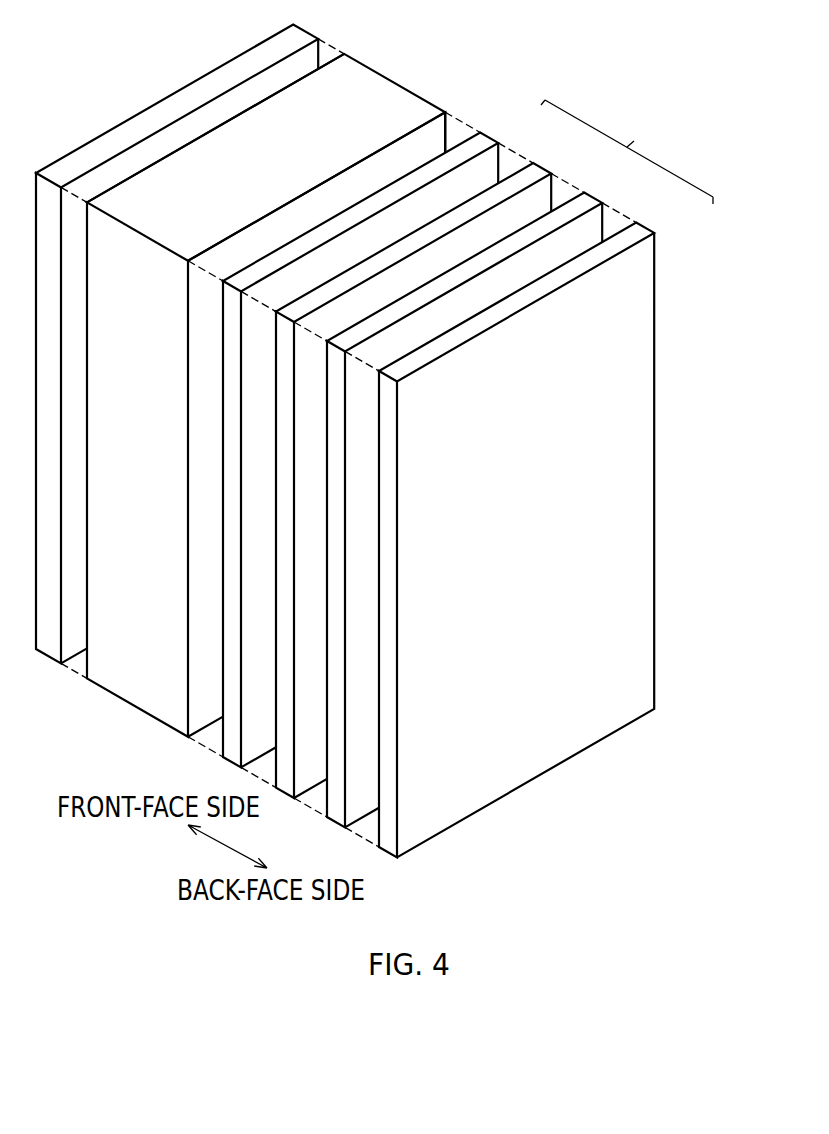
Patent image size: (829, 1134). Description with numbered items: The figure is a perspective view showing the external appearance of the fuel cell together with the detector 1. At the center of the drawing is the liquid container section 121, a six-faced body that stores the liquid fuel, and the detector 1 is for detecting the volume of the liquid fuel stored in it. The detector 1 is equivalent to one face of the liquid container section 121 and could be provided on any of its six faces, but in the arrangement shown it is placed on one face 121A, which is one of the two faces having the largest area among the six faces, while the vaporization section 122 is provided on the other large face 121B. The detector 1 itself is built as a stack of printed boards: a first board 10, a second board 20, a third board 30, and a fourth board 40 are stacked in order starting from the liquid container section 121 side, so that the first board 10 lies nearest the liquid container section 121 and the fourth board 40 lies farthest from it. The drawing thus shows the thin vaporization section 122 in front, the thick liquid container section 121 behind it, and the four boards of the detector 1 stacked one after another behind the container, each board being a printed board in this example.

The detector 1 is at (627, 152).
The first board 10 is at (482, 136).
The second board 20 is at (535, 164).
The third board 30 is at (586, 195).
The fourth board 40 is at (640, 225).
The liquid container section 121 is at (385, 90).
The one face 121A is at (434, 130).
The other face 121B is at (206, 119).
The vaporization section 122 is at (297, 38).